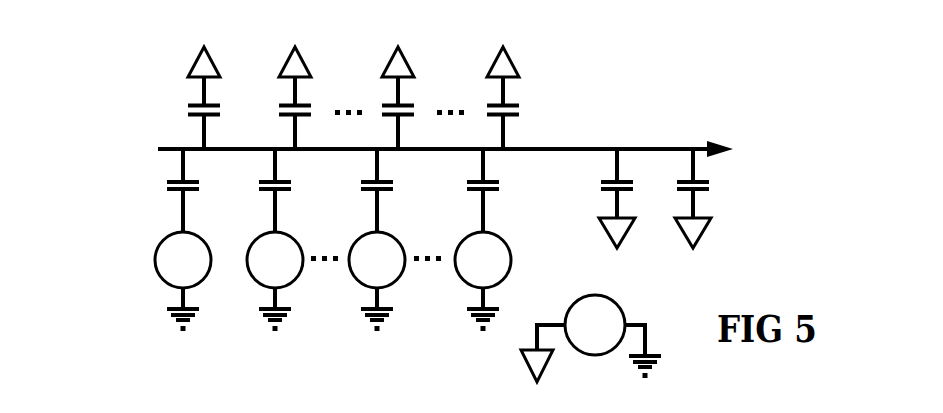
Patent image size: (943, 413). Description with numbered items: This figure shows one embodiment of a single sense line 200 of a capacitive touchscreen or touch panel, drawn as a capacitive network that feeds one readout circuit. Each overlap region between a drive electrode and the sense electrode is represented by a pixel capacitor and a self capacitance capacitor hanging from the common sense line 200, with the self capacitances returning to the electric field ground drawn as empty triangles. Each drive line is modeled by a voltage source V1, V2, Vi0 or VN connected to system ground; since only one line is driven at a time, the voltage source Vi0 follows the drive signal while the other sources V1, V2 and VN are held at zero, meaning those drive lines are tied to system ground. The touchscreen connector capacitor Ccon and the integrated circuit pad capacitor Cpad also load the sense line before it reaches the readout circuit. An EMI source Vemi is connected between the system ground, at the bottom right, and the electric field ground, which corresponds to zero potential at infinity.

The sense line 200 is at (128, 50).
The touchscreen connector capacitor Ccon is at (600, 199).
The integrated circuit pad capacitor Cpad is at (674, 199).
The voltage source V1 is at (183, 281).
The voltage source V2 is at (275, 281).
The voltage source Vi0 is at (377, 281).
The voltage source VN is at (483, 281).
The EMI source Vemi is at (591, 338).